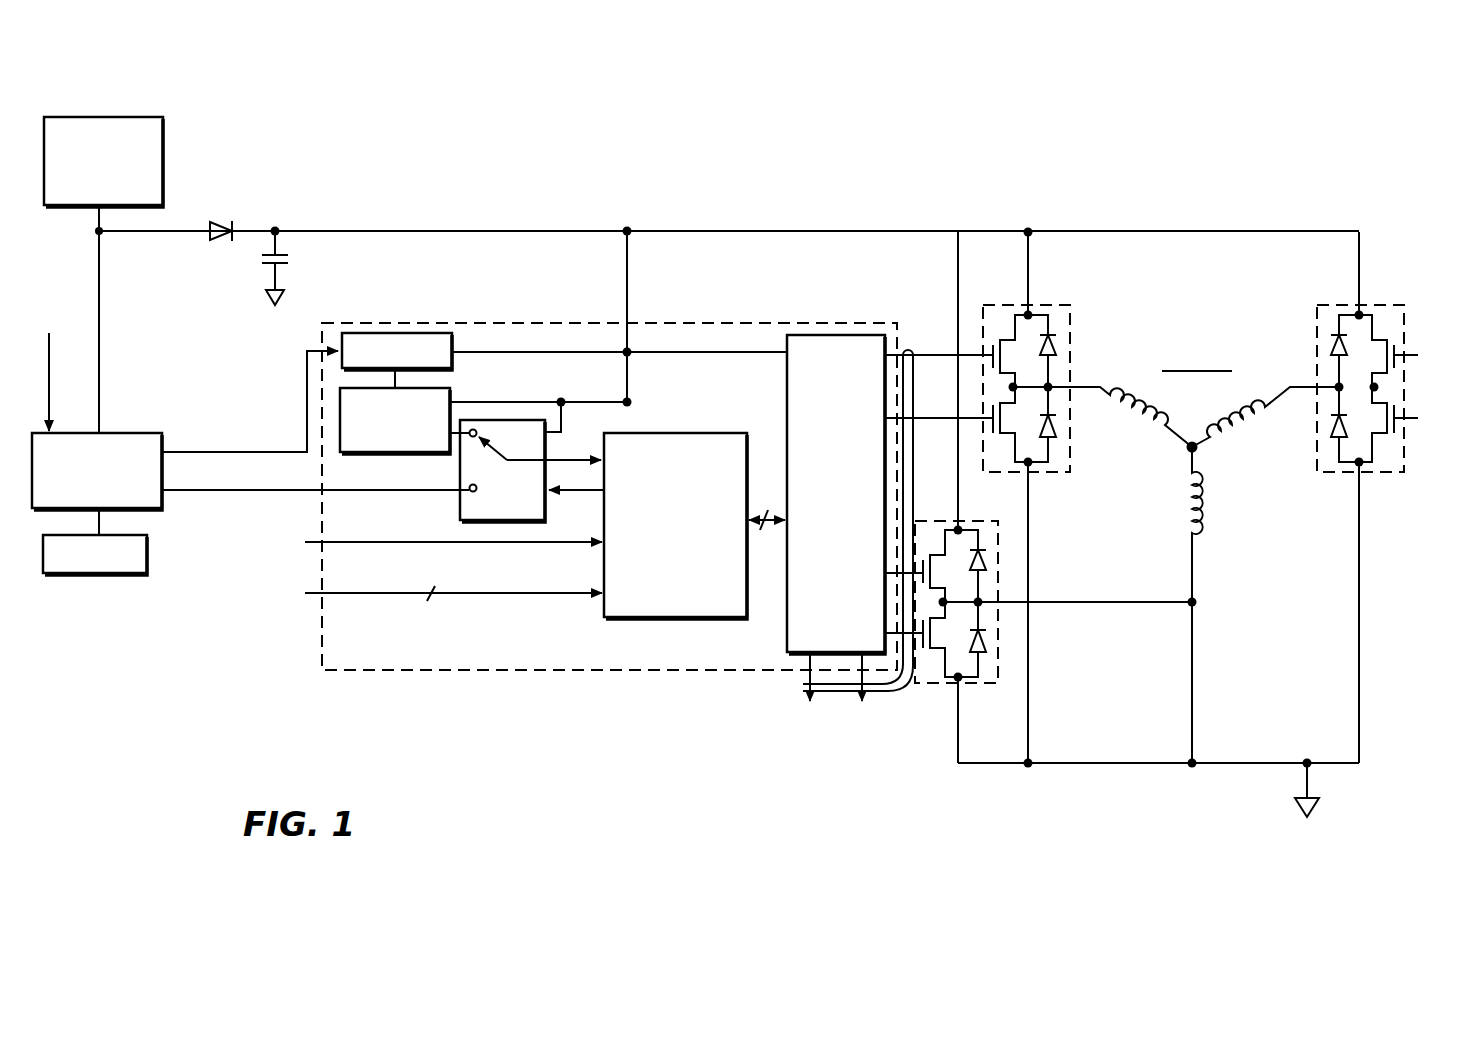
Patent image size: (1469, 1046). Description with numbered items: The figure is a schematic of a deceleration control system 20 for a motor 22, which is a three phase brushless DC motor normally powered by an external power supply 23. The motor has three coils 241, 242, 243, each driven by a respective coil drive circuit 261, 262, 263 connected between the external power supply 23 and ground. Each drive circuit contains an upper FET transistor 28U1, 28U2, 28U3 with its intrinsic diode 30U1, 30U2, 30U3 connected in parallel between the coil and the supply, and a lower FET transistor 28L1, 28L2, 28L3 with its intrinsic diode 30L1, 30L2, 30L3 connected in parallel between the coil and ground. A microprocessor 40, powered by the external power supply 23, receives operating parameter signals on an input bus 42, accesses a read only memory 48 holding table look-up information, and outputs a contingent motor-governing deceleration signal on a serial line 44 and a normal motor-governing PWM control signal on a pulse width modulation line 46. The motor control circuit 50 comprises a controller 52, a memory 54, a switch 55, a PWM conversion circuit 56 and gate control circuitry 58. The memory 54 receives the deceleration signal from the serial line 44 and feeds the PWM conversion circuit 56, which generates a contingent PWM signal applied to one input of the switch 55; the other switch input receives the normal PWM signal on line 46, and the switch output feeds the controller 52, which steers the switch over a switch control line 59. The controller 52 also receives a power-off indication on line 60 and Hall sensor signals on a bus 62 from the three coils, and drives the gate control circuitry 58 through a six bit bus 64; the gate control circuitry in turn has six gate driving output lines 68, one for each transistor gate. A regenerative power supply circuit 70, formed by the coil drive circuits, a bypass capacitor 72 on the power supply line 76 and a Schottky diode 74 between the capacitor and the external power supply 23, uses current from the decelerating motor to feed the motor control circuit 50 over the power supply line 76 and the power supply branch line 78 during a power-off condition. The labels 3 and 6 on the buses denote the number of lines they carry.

The deceleration control system 20 is at (670, 195).
The motor 22 is at (1219, 327).
The external power supply 23 is at (144, 117).
The coil 241 is at (1233, 432).
The coil 242 is at (1167, 434).
The coil 243 is at (1187, 501).
The coil drive circuit 261 is at (1375, 297).
The coil drive circuit 262 is at (1041, 300).
The coil drive circuit 263 is at (978, 690).
The FET transistor 28U1 is at (1388, 343).
The FET transistor 28L1 is at (1388, 434).
The FET transistor 28U2 is at (1005, 340).
The FET transistor 28L2 is at (1005, 437).
The FET transistor 28U3 is at (931, 572).
The FET transistor 28L3 is at (923, 652).
The intrinsic diode 30U1 is at (1330, 349).
The intrinsic diode 30L1 is at (1333, 442).
The intrinsic diode 30U2 is at (1058, 356).
The intrinsic diode 30L2 is at (1057, 445).
The intrinsic diode 30U3 is at (990, 566).
The intrinsic diode 30L3 is at (990, 656).
The microprocessor 40 is at (116, 433).
The input bus 42 is at (49, 345).
The serial line 44 is at (304, 432).
The pulse width modulation line 46 is at (285, 492).
The read only memory 48 is at (100, 573).
The motor control circuit 50 is at (536, 672).
The controller 52 is at (747, 585).
The memory 54 is at (452, 360).
The switch 55 is at (457, 500).
The PWM conversion circuit 56 is at (452, 397).
The gate control circuitry 58 is at (787, 395).
The switch control line 59 is at (587, 494).
The line 60 is at (355, 543).
The bus 62 is at (357, 594).
The three hall sensor lines 3 is at (432, 581).
The six bit bus 64 is at (765, 527).
The six gate control lines 6 is at (768, 509).
The gate driving output lines 68 is at (802, 688).
The regenerative power supply circuit 70 is at (292, 216).
The bypass capacitor 72 is at (262, 273).
The diode 74 is at (212, 242).
The power supply line 76 is at (482, 231).
The power supply branch line 78 is at (627, 284).